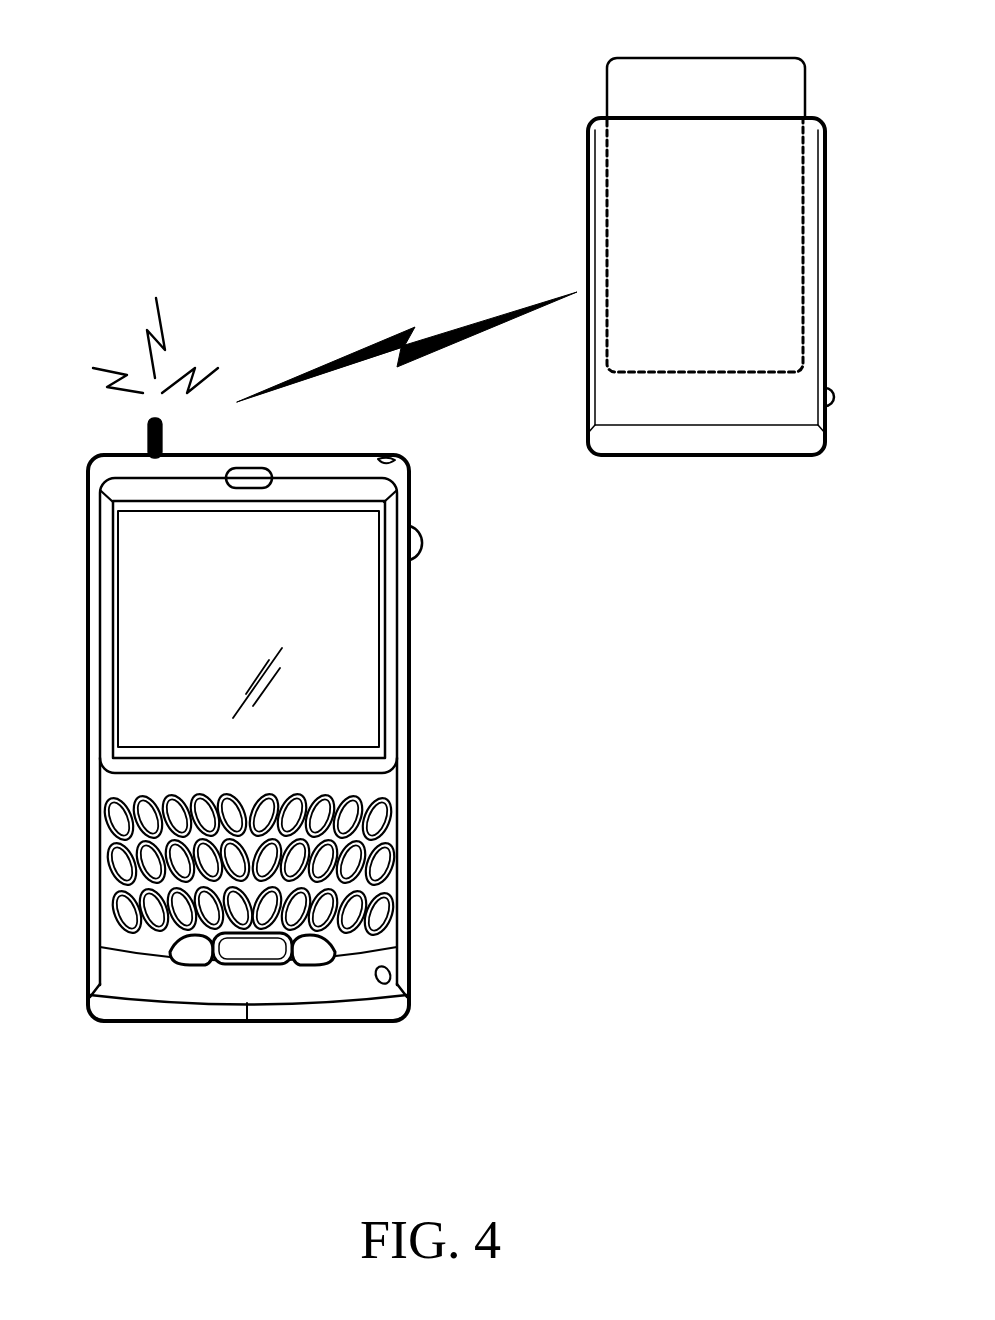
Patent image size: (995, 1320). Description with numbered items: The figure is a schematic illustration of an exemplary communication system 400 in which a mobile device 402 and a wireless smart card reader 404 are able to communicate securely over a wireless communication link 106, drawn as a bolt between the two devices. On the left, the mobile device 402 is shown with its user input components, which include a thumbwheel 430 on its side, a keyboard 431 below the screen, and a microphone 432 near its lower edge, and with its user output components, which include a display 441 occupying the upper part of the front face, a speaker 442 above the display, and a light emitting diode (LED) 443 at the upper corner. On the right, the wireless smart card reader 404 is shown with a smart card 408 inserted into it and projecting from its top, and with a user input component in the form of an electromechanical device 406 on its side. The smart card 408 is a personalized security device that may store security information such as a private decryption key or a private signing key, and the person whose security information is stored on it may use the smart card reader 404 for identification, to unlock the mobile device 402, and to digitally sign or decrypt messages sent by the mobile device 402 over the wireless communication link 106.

The communication system 400 is at (288, 70).
The mobile device 402 is at (262, 1023).
The wireless smart card reader 404 is at (587, 250).
The electromechanical device 406 is at (832, 397).
The smart card 408 is at (662, 58).
The wireless communication link 106 is at (357, 350).
The thumbwheel 430 is at (421, 538).
The keyboard 431 is at (386, 791).
The microphone 432 is at (393, 972).
The display 441 is at (138, 592).
The speaker 442 is at (246, 464).
The light emitting diode (LED) 443 is at (397, 455).